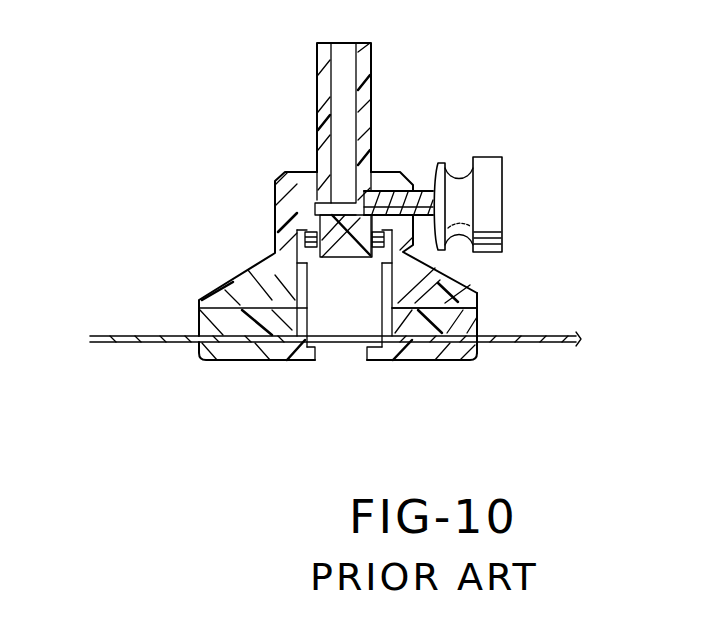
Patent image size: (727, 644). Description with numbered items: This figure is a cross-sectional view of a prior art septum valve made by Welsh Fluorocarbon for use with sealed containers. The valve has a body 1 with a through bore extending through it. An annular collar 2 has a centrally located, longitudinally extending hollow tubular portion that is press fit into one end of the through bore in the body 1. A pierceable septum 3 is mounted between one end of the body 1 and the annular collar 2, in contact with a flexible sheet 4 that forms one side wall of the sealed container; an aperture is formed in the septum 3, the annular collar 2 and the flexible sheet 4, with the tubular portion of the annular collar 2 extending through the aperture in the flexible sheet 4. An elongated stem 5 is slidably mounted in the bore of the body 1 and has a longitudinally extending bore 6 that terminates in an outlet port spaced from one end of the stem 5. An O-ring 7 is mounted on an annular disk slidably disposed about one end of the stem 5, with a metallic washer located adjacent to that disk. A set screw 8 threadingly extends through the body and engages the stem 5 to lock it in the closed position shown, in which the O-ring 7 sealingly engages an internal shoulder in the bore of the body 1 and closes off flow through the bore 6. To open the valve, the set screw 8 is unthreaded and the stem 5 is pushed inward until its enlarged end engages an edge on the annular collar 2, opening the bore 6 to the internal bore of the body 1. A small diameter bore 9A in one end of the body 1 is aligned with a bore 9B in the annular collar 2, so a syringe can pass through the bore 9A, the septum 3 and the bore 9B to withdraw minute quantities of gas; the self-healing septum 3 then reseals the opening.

The body 1 is at (262, 275).
The annular collar 2 is at (418, 358).
The pierceable septum 3 is at (480, 323).
The flexible sheet 4 is at (543, 336).
The stem 5 is at (317, 63).
The bore 6 is at (340, 70).
The O-ring 7 is at (305, 230).
The set screw 8 is at (490, 158).
The small diameter bore 9A is at (239, 288).
The bore 9B is at (223, 338).